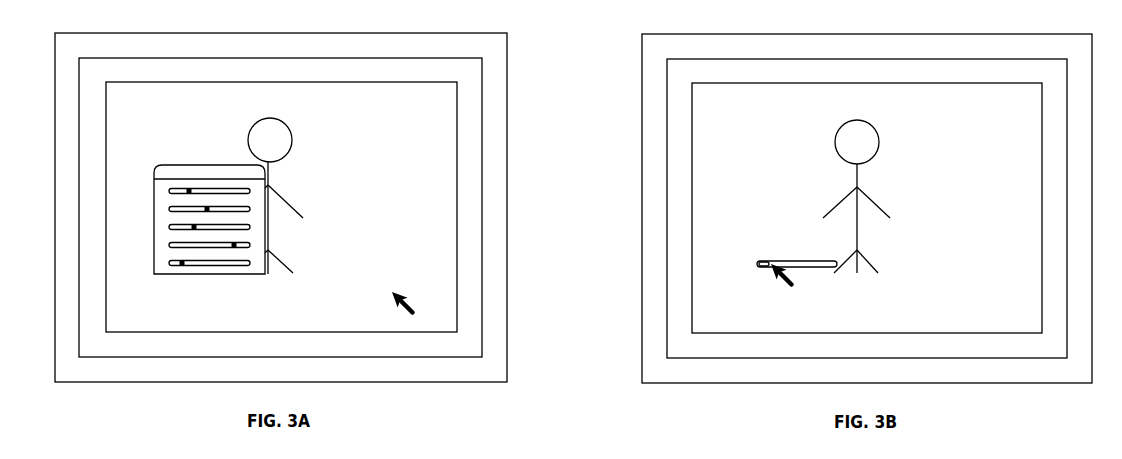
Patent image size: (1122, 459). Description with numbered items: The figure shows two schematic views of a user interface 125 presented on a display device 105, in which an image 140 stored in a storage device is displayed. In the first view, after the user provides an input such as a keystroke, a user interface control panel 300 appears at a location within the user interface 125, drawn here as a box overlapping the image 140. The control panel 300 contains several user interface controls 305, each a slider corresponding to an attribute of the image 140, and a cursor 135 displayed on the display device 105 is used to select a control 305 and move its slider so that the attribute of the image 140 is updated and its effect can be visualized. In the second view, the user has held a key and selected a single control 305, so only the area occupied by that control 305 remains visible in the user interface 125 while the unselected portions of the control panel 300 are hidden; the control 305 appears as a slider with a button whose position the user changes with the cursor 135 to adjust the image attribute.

In FIG. 3A, the display device 105 is at (507, 75).
In FIG. 3B, the display device 105 is at (642, 75).
In FIG. 3A, the user interface 125 is at (482, 133).
In FIG. 3B, the user interface 125 is at (667, 133).
In FIG. 3A, the image 140 is at (457, 191).
In FIG. 3B, the image 140 is at (692, 191).
In FIG. 3A, the cursor 135 is at (415, 304).
In FIG. 3B, the cursor 135 is at (771, 265).
In FIG. 3A, the user interface control panel 300 is at (368, 290).
In FIG. 3B, the user interface control 305 is at (701, 310).